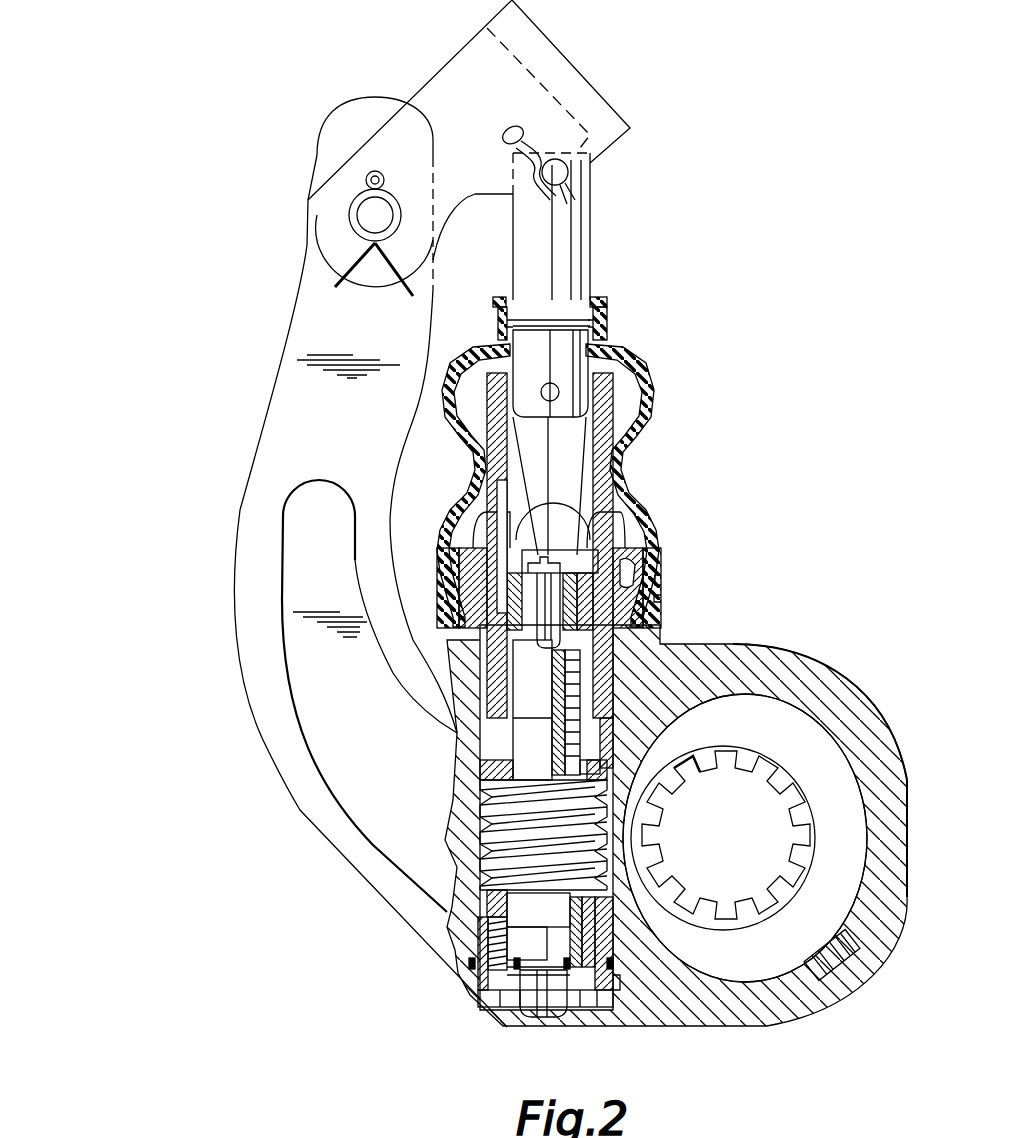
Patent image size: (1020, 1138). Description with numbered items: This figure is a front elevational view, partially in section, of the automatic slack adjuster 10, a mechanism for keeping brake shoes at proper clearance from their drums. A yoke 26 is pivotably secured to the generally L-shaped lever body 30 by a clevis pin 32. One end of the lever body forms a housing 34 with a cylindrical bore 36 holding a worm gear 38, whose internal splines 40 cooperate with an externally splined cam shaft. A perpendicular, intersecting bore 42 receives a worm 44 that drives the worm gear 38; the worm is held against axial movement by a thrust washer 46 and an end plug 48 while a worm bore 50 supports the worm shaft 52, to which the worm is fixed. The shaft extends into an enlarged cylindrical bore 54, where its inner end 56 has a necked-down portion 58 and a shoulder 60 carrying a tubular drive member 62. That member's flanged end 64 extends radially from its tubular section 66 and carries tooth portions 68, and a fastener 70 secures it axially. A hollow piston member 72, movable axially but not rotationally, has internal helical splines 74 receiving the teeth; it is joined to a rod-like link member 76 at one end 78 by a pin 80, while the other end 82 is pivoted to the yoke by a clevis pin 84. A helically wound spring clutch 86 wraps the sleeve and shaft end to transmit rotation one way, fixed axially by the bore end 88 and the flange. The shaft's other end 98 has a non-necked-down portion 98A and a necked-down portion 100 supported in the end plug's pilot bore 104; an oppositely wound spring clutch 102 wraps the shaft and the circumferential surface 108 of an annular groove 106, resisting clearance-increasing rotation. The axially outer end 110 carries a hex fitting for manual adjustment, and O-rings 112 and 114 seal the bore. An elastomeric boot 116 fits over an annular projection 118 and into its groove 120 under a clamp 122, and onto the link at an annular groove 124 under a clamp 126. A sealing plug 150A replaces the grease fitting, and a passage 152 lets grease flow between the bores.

The automatic slack adjuster 10 is at (282, 307).
The yoke 26 is at (452, 82).
The lever body 30 is at (250, 452).
The clevis pin 32 is at (368, 224).
The housing 34 is at (800, 655).
The cylindrical bore 36 is at (805, 727).
The worm gear 38 is at (630, 875).
The internal splines 40 is at (660, 880).
The bore 42 is at (497, 770).
The worm 44 is at (497, 820).
The thrust washer 46 is at (528, 745).
The end plug 48 is at (477, 920).
The worm bore 50 is at (693, 777).
The worm shaft 52 is at (462, 690).
The enlarged cylindrical bore 54 is at (437, 613).
The inner end 56 is at (573, 660).
The necked-down portion 58 is at (536, 650).
The shoulder 60 is at (520, 647).
The tubular drive member 62 is at (478, 600).
The flanged end 64 is at (478, 565).
The tubular section 66 is at (640, 630).
The tooth portions 68 is at (625, 570).
The fastener 70 is at (548, 555).
The piston member 72 is at (497, 432).
The internal helical splines 74 is at (533, 500).
The link member 76 is at (585, 247).
The end of link member 78 is at (583, 405).
The pin 80 is at (549, 385).
The other end of link member 82 is at (592, 140).
The clevis pin 84 is at (557, 173).
The spring clutch 86 is at (590, 680).
The end of cylindrical bore 88 is at (625, 735).
The other end of worm shaft 98 is at (460, 880).
The non-necked-down portion 98A is at (615, 985).
The necked-down portion 100 is at (507, 932).
The spring clutch 102 is at (447, 913).
The cylindrical bore 104 is at (473, 963).
The annular groove 106 is at (600, 985).
The circumferential surface 108 is at (600, 975).
The axially outer end 110 is at (530, 1005).
The O-ring 112 is at (477, 950).
The O-ring 114 is at (570, 990).
The boot 116 is at (642, 492).
The annular projection 118 is at (480, 530).
The annular groove 120 is at (661, 580).
The clamp 122 is at (661, 598).
The annular groove 124 is at (528, 335).
The clamp 126 is at (500, 333).
The sealing plug 150A is at (850, 970).
The passage 152 is at (635, 728).